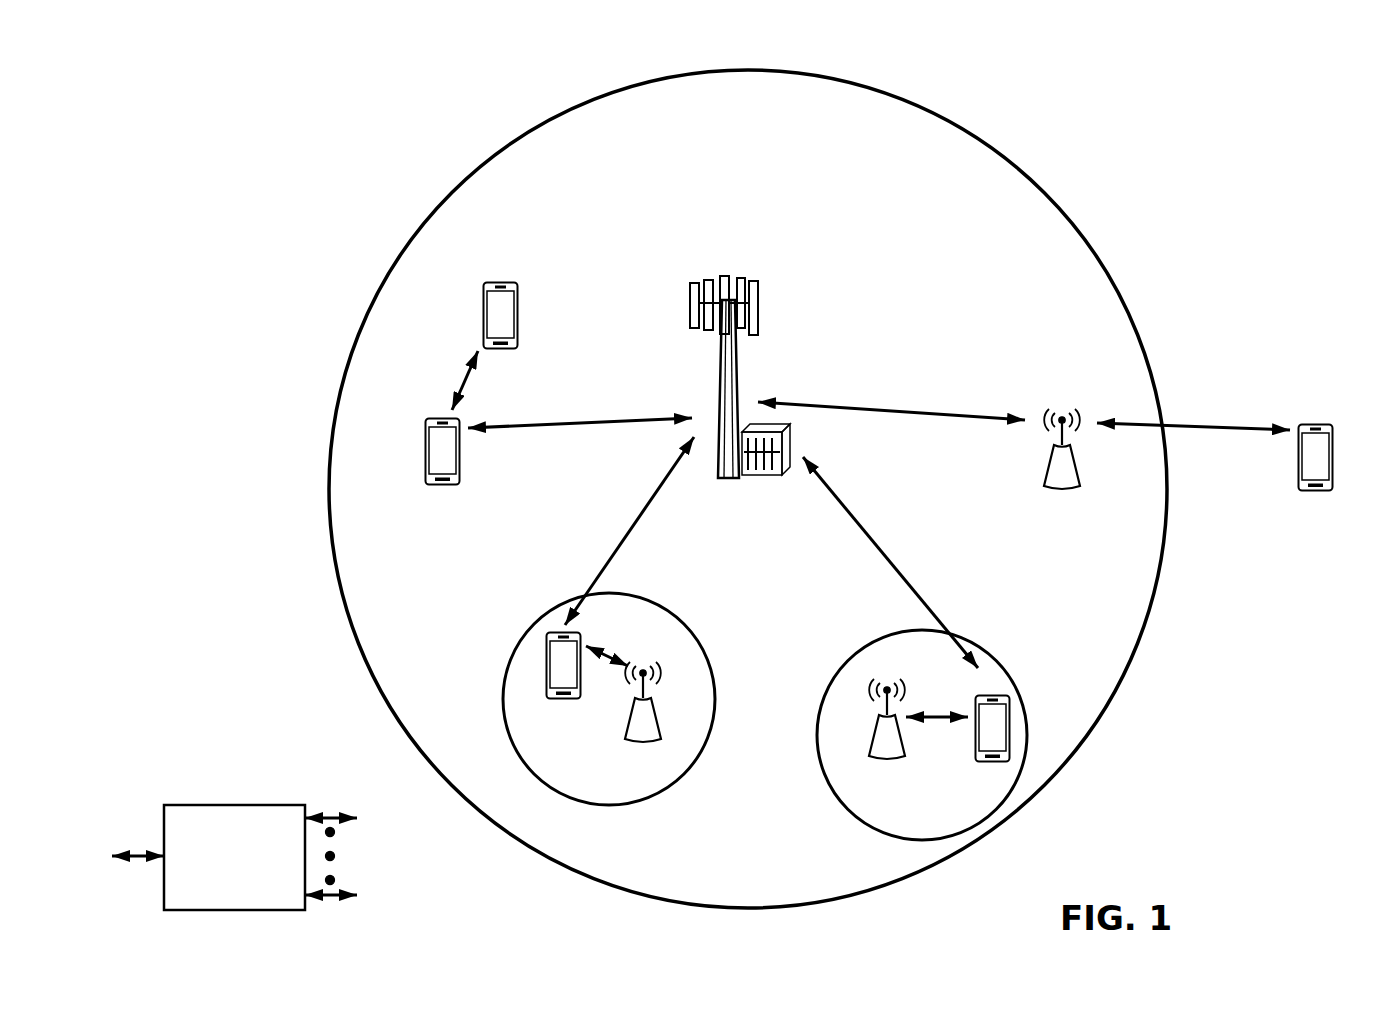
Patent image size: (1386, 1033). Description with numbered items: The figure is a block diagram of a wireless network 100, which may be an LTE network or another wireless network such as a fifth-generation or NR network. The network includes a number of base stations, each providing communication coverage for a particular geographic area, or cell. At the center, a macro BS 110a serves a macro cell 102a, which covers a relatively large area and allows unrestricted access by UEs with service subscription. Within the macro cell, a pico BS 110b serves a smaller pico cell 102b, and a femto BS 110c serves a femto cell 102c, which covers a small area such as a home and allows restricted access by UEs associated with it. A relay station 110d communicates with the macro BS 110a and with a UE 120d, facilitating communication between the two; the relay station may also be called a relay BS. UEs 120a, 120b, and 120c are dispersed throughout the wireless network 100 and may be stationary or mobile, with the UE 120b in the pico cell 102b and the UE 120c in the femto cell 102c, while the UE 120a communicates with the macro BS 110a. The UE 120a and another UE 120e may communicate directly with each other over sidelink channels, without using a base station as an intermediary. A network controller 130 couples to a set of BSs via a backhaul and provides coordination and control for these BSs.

The wireless network 100 is at (222, 66).
The macro cell 102a is at (1028, 176).
The pico cell 102b is at (700, 627).
The femto cell 102c is at (858, 646).
The macro BS 110a is at (735, 270).
The pico BS 110b is at (662, 727).
The femto BS 110c is at (872, 745).
The relay station 110d is at (1062, 410).
The UE 120a is at (425, 441).
The UE 120b is at (552, 705).
The UE 120c is at (976, 764).
The UE 120d is at (1326, 421).
The UE 120e is at (484, 302).
The network controller 130 is at (233, 805).